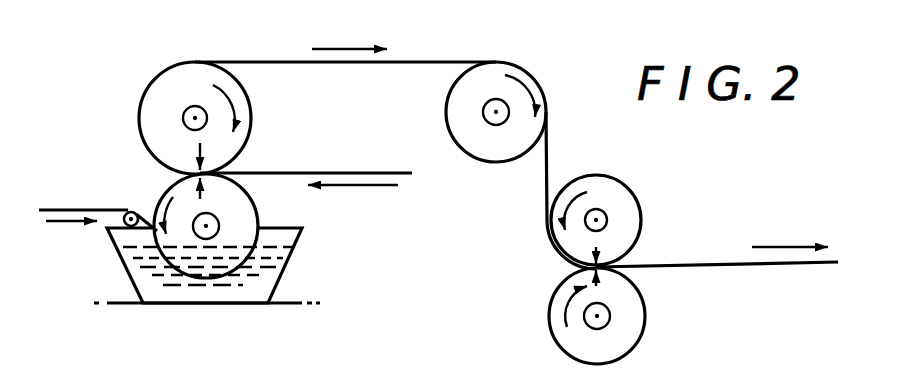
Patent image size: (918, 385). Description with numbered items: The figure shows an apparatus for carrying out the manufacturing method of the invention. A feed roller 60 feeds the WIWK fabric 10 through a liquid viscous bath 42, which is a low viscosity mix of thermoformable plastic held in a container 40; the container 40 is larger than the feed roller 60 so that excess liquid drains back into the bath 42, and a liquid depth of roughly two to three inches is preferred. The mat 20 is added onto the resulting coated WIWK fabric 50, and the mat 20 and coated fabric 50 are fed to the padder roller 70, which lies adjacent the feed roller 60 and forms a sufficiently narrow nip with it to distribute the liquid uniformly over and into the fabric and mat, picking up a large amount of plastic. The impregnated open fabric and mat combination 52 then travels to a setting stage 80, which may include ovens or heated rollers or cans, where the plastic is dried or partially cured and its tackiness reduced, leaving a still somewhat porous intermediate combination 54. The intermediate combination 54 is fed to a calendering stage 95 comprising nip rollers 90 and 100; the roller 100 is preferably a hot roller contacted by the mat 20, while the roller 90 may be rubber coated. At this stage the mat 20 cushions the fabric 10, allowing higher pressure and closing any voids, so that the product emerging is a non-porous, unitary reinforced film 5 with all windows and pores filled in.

The reinforced film 5 is at (692, 259).
The WIWK fabric 10 is at (83, 210).
The mat 20 is at (375, 170).
The container 40 is at (135, 281).
The liquid viscous bath 42 is at (267, 261).
The coated WIWK fabric 50 is at (252, 206).
The open fabric and mat combination 52 is at (455, 59).
The intermediate combination 54 is at (550, 138).
The feed roller 60 is at (156, 196).
The padder roller 70 is at (249, 97).
The setting stage 80 is at (510, 146).
The nip roller 90 is at (626, 220).
The calendering stage 95 is at (574, 267).
The hot roller 100 is at (640, 311).